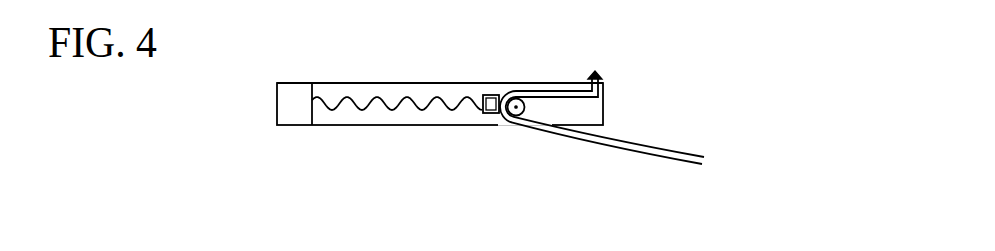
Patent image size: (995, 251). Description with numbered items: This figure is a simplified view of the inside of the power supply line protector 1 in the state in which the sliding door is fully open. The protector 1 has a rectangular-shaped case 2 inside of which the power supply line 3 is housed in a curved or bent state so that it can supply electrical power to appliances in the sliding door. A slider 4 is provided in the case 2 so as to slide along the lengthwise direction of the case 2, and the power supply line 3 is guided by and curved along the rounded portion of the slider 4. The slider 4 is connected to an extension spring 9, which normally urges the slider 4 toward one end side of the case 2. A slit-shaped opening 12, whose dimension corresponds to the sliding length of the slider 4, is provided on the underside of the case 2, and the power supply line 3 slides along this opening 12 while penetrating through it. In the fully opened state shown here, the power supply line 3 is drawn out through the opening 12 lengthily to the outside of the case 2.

The power supply line protector 1 is at (443, 84).
The case 2 is at (333, 87).
The power supply line 3 is at (621, 143).
The slider 4 is at (497, 120).
The extension spring 9 is at (392, 104).
The opening 12 is at (477, 125).